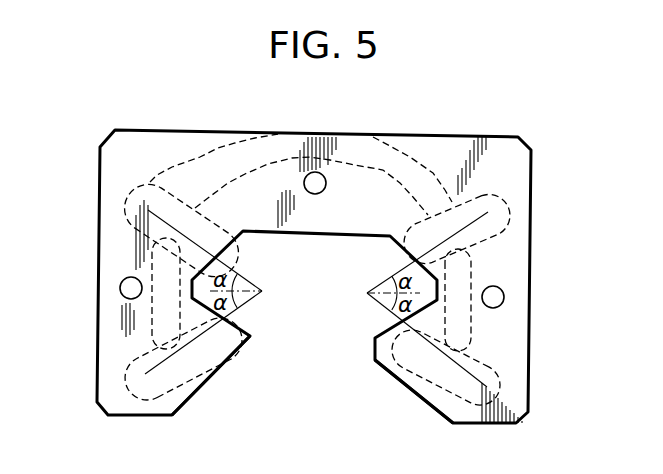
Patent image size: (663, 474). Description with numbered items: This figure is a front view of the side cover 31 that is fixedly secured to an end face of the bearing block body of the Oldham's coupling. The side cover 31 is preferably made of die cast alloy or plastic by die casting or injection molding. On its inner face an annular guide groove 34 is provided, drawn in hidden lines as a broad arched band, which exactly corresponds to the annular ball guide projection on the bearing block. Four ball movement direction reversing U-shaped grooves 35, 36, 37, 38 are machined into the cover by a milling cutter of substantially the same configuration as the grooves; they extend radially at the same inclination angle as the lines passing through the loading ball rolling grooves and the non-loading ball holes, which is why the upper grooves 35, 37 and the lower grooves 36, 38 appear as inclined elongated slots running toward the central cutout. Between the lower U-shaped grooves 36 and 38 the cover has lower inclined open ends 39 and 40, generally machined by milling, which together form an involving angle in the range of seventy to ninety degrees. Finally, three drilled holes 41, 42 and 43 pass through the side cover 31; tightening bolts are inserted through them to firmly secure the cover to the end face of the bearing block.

The side cover 31 is at (437, 133).
The annular guide groove 34 is at (218, 152).
The ball movement direction reversing U-shaped groove 35 is at (193, 219).
The ball movement direction reversing U-shaped groove 36 is at (140, 397).
The ball movement direction reversing U-shaped groove 37 is at (505, 211).
The ball movement direction reversing U-shaped groove 38 is at (445, 327).
The lower inclined open end 39 is at (230, 376).
The lower inclined open end 40 is at (386, 370).
The drilled hole 41 is at (304, 184).
The drilled hole 42 is at (120, 290).
The drilled hole 43 is at (504, 296).